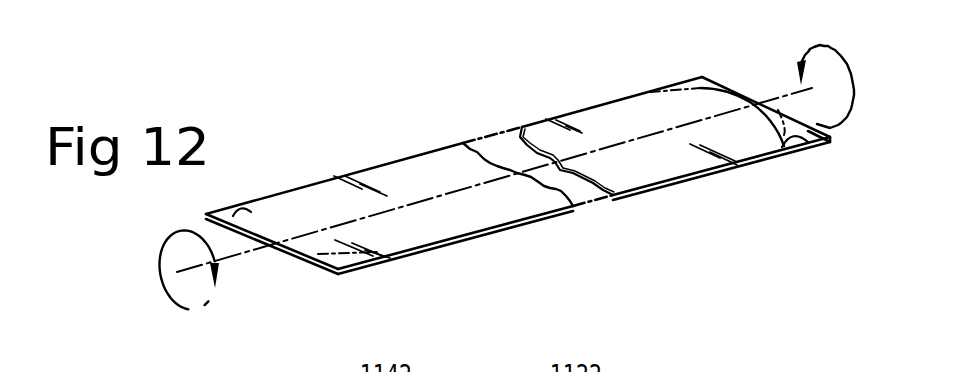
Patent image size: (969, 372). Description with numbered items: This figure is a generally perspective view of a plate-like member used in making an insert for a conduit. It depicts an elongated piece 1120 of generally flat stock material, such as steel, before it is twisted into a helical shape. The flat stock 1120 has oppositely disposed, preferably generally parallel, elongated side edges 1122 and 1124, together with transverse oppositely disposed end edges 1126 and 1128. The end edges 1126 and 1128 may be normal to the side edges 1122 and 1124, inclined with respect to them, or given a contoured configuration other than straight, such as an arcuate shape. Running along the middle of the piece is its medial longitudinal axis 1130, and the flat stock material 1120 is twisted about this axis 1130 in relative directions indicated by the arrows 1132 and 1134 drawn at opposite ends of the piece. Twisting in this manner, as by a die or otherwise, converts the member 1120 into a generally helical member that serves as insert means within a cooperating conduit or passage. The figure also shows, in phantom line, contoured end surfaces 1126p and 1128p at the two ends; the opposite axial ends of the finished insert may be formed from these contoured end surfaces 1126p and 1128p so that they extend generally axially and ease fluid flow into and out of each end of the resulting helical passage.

The elongated piece of flat stock material 1120 is at (428, 221).
The elongated side edge 1122 is at (409, 157).
The elongated side edge 1124 is at (648, 190).
The end edge 1126 is at (303, 262).
The contoured end surface 1126p is at (251, 234).
The end edge 1128 is at (735, 96).
The contoured end surface 1128p is at (808, 146).
The medial longitudinal axis 1130 is at (528, 174).
The arrow 1132 is at (173, 287).
The arrow 1134 is at (855, 96).